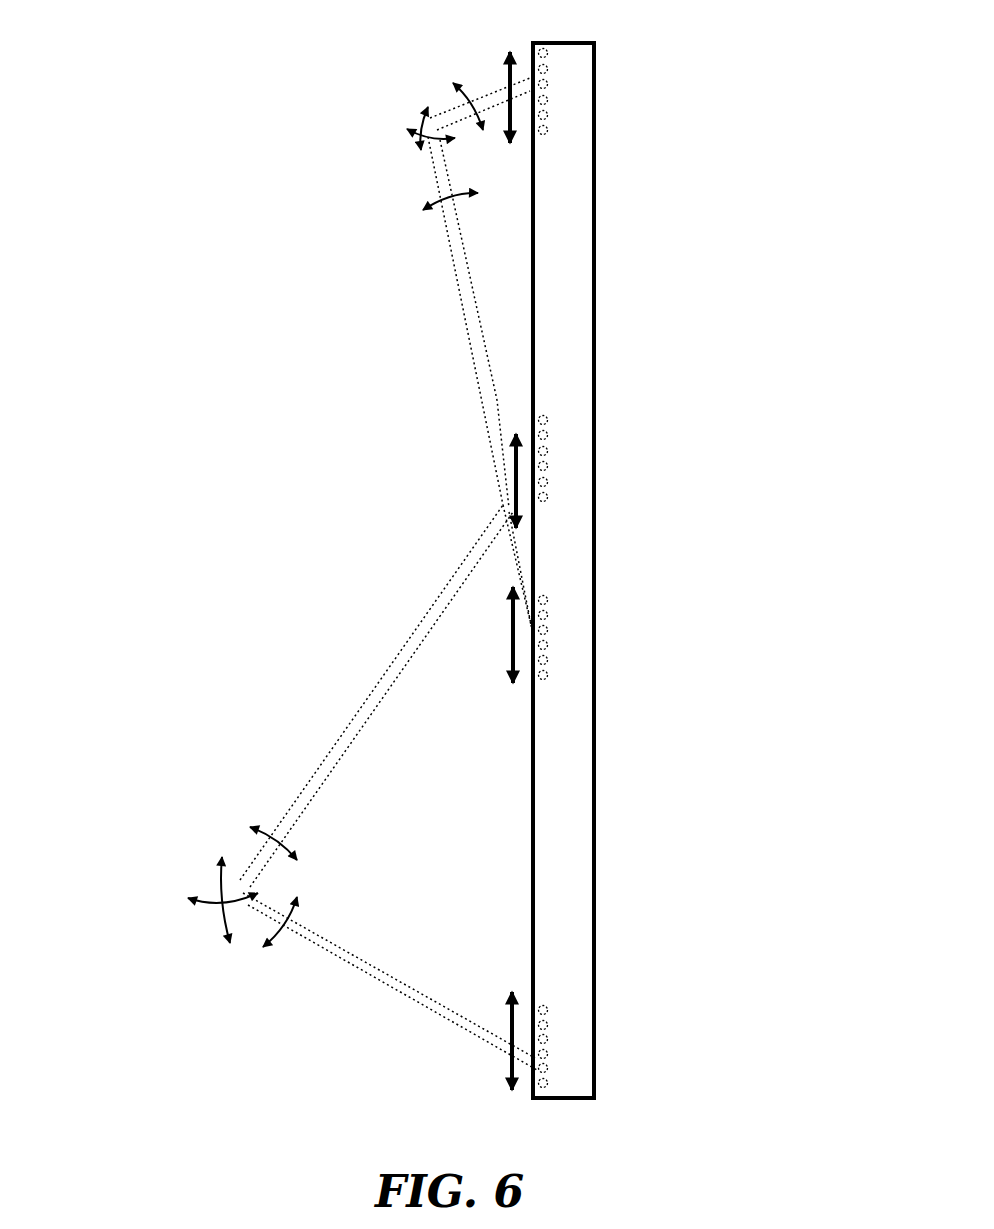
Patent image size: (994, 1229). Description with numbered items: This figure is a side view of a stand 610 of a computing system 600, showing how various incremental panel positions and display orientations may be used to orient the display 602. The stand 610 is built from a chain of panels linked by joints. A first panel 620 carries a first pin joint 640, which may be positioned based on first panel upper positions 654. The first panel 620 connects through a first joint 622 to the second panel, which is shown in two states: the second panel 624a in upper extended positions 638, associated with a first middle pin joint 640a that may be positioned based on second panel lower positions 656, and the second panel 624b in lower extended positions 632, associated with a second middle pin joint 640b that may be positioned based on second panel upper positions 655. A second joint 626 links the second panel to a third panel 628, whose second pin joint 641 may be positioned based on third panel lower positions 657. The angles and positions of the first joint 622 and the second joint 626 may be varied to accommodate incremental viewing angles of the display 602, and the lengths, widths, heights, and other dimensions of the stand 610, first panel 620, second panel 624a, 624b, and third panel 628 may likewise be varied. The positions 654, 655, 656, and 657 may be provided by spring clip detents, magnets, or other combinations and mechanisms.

The computing system 600 is at (562, 43).
The display 602 is at (737, 315).
The stand 610 is at (232, 530).
The first panel 620 is at (502, 88).
The first joint 622 is at (425, 122).
The second panel 624a is at (464, 299).
The second panel 624b is at (383, 675).
The second joint 626 is at (235, 888).
The third panel 628 is at (410, 1000).
The lower extended positions 632 is at (148, 950).
The upper extended positions 638 is at (347, 190).
The first pin joint 640 is at (547, 82).
The first middle pin joint 640a is at (548, 630).
The second middle pin joint 640b is at (548, 467).
The second pin joint 641 is at (546, 1072).
The first panel upper positions 654 is at (604, 77).
The second panel upper positions 655 is at (614, 443).
The second panel lower positions 656 is at (617, 630).
The third panel lower positions 657 is at (610, 1042).